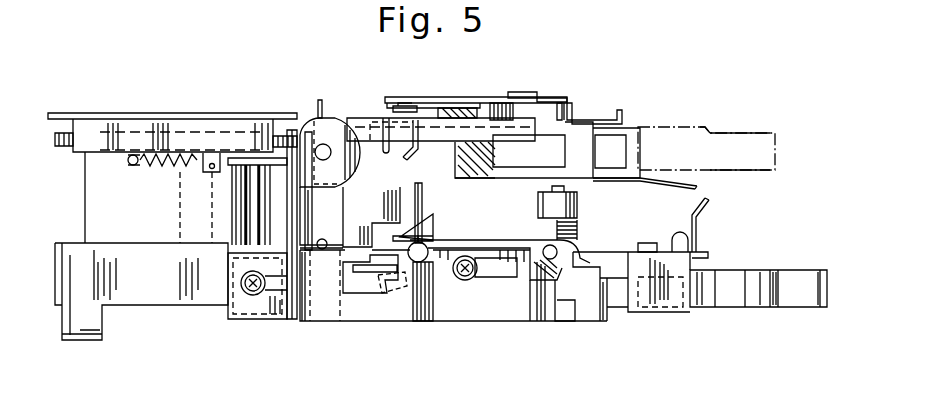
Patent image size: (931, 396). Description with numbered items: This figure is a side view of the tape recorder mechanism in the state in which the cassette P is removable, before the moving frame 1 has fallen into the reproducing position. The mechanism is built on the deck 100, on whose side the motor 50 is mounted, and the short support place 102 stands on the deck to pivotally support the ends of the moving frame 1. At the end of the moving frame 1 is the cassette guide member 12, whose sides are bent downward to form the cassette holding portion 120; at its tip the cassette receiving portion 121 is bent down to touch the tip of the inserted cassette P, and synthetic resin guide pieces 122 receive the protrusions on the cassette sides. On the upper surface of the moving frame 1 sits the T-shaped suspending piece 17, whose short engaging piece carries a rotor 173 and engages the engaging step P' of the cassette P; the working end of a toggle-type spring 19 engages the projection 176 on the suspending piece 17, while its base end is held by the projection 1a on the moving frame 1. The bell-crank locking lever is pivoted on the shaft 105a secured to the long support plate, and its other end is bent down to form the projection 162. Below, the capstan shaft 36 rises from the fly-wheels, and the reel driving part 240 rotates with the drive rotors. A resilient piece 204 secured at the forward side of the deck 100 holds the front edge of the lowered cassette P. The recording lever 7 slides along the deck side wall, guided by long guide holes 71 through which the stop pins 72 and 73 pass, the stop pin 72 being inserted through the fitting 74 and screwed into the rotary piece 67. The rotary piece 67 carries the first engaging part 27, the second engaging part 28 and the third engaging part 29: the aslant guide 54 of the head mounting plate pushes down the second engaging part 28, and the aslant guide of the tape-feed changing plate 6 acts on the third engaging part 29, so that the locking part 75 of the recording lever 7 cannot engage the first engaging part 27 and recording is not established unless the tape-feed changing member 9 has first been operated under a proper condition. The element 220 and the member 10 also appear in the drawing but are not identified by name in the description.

The cover plate 220 is at (185, 135).
The motor 50 is at (100, 206).
The long guide hole 71 is at (305, 140).
The short support place 102 is at (313, 138).
The holder block 10 is at (352, 213).
The cassette receiving portion 121 is at (375, 140).
The moving frame 1 is at (505, 133).
The cassette holding portion 120 is at (587, 155).
The guide piece 122 is at (618, 140).
The cassette guide member 12 is at (597, 119).
The cassette P is at (706, 129).
The engaging step P' is at (714, 108).
The spring 19 is at (450, 97).
The suspending piece 17 is at (552, 98).
The projection 176 is at (528, 92).
The rotor 173 is at (573, 103).
The projection 1a is at (497, 103).
The shaft 105a is at (405, 106).
The projection 162 is at (408, 157).
The capstan shaft 36 is at (422, 191).
The aslant guide 54 is at (427, 226).
The rotary piece 67 is at (498, 240).
The locking part 75 is at (558, 268).
The first engaging part 27 is at (553, 268).
The reel driving part 240 is at (577, 210).
The resilient piece 204 is at (703, 208).
The recording lever 7 is at (737, 310).
The tape-feed changing member 9 is at (762, 281).
The deck 100 is at (152, 278).
The fitting 74 is at (241, 284).
The stop pin 73 is at (250, 294).
The tape-feed changing plate 6 is at (367, 272).
The third engaging part 29 is at (395, 293).
The second engaging part 28 is at (421, 321).
The stop pin 72 is at (466, 282).